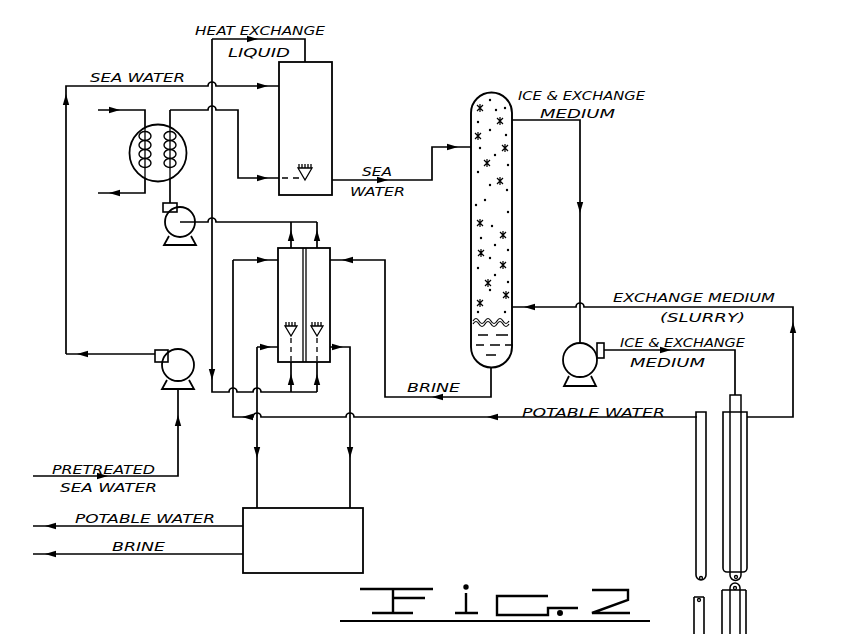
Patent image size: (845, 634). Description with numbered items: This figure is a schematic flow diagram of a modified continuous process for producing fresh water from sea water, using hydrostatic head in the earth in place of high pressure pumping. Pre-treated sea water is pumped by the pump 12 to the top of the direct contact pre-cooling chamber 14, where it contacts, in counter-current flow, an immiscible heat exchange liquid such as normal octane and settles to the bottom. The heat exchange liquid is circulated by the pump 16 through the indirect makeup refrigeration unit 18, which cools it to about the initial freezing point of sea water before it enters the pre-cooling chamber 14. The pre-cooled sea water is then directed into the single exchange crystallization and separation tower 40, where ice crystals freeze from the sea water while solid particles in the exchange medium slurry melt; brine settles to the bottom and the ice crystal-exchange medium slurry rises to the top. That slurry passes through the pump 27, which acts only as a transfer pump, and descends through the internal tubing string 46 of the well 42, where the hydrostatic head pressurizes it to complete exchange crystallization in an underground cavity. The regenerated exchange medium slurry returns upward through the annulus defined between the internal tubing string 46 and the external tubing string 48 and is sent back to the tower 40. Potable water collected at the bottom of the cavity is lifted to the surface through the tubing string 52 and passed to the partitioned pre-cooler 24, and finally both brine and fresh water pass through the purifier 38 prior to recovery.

The pump 12 is at (169, 373).
The direct contact pre-cooling chamber 14 is at (314, 113).
The pump 16 is at (167, 229).
The indirect makeup refrigeration unit 18 is at (135, 158).
The partitioned pre-cooler 24 is at (322, 300).
The pump 27 is at (566, 362).
The purifier 38 is at (306, 548).
The exchange crystallization and separation tower 40 is at (499, 205).
The well 42 is at (752, 512).
The internal tubing string 46 is at (735, 477).
The external tubing string 48 is at (748, 630).
The tubing string 52 is at (697, 492).